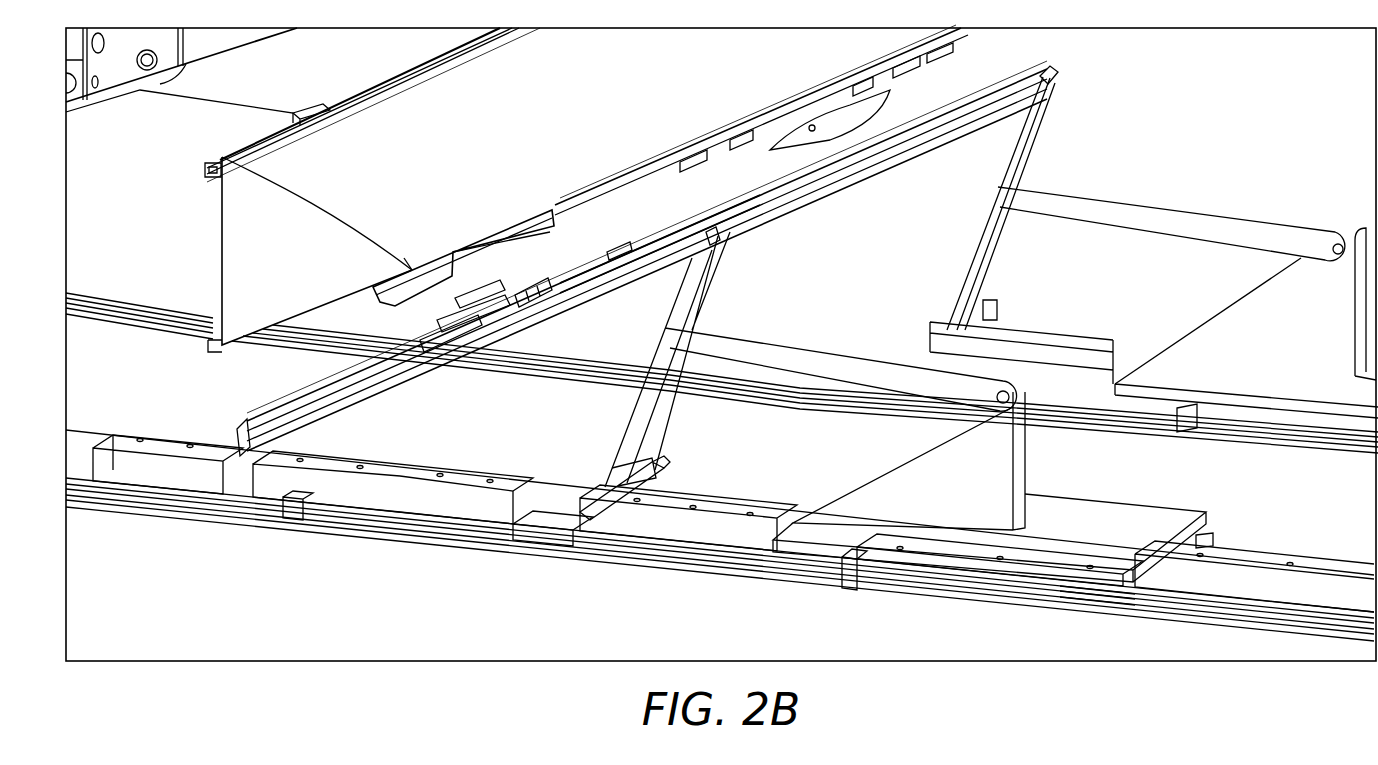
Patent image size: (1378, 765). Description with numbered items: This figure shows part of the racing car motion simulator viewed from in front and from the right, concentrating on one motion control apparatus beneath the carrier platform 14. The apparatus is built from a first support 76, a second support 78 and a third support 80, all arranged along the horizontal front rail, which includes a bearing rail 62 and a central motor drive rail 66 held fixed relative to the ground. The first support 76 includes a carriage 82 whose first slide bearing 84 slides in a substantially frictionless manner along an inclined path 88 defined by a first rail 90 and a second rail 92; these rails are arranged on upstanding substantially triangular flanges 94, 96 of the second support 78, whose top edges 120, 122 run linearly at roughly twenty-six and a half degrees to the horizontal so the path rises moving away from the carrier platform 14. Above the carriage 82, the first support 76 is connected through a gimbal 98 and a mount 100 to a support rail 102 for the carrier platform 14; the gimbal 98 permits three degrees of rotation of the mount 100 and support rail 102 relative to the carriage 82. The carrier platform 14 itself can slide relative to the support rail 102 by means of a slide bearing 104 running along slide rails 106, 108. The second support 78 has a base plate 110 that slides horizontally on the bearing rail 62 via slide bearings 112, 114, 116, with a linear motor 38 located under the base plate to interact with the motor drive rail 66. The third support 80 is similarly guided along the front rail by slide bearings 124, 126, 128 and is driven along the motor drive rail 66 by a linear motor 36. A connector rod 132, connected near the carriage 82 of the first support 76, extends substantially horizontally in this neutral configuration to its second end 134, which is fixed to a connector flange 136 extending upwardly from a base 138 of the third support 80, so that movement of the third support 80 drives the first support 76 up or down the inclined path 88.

The carrier platform 14 is at (110, 250).
The linear motor 36 is at (1254, 599).
The linear motor 38 is at (688, 426).
The bearing rail 62 is at (1287, 597).
The motor drive rail 66 is at (747, 533).
The first support 76 is at (528, 330).
The second support 78 is at (305, 455).
The third support 80 is at (957, 540).
The carriage 82 is at (460, 356).
The first slide bearing 84 is at (497, 345).
The inclined path 88 is at (647, 256).
The first rail 90 is at (633, 240).
The second rail 92 is at (687, 227).
The triangular flange 94 is at (360, 457).
The triangular flange 96 is at (653, 410).
The gimbal 98 is at (480, 295).
The mount 100 is at (425, 268).
The support rail 102 is at (222, 244).
The slide bearing 104 is at (316, 108).
The slide rail 106 is at (212, 353).
The slide rail 108 is at (205, 172).
The base plate 110 is at (473, 497).
The slide bearing 112 is at (266, 527).
The slide bearing 114 is at (535, 547).
The slide bearing 116 is at (665, 486).
The top edge 120 is at (392, 385).
The top edge 122 is at (716, 242).
The slide bearing 124 is at (853, 593).
The slide bearing 126 is at (1087, 593).
The slide bearing 128 is at (1240, 521).
The connector rod 132 is at (833, 373).
The second end 134 is at (998, 383).
The connector flange 136 is at (1000, 470).
The base 138 is at (1145, 514).